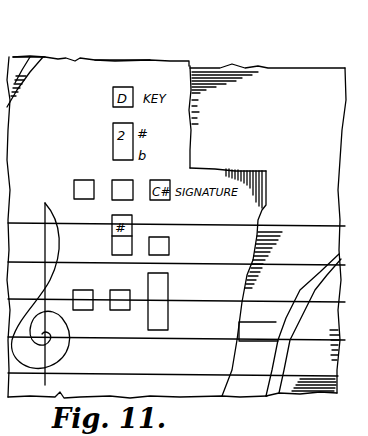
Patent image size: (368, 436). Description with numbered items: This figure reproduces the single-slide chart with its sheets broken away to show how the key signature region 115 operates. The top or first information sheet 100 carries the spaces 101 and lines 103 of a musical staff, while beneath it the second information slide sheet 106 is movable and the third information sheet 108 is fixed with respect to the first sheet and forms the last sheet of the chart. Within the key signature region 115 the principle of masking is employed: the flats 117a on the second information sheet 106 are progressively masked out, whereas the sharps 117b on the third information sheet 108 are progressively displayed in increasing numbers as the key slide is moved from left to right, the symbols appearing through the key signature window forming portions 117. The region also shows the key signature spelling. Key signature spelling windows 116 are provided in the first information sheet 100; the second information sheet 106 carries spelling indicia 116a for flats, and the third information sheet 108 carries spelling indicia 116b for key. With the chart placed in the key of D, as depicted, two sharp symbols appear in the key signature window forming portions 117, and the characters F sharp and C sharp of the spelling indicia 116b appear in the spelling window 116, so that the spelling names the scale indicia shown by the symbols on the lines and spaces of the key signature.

The first information sheet 100 is at (190, 59).
The spaces 101 is at (176, 299).
The lines 103 is at (60, 219).
The second information slide sheet 106 is at (328, 80).
The third information sheet 108 is at (22, 57).
The key signature region 115 is at (153, 49).
The key signature spelling windows 116 is at (73, 186).
The spelling indicia for flats 116a is at (334, 195).
The spelling indicia for key 116b is at (131, 182).
The key signature window forming portions 117 is at (168, 320).
The flats 117a is at (258, 331).
The sharps 117b is at (168, 277).